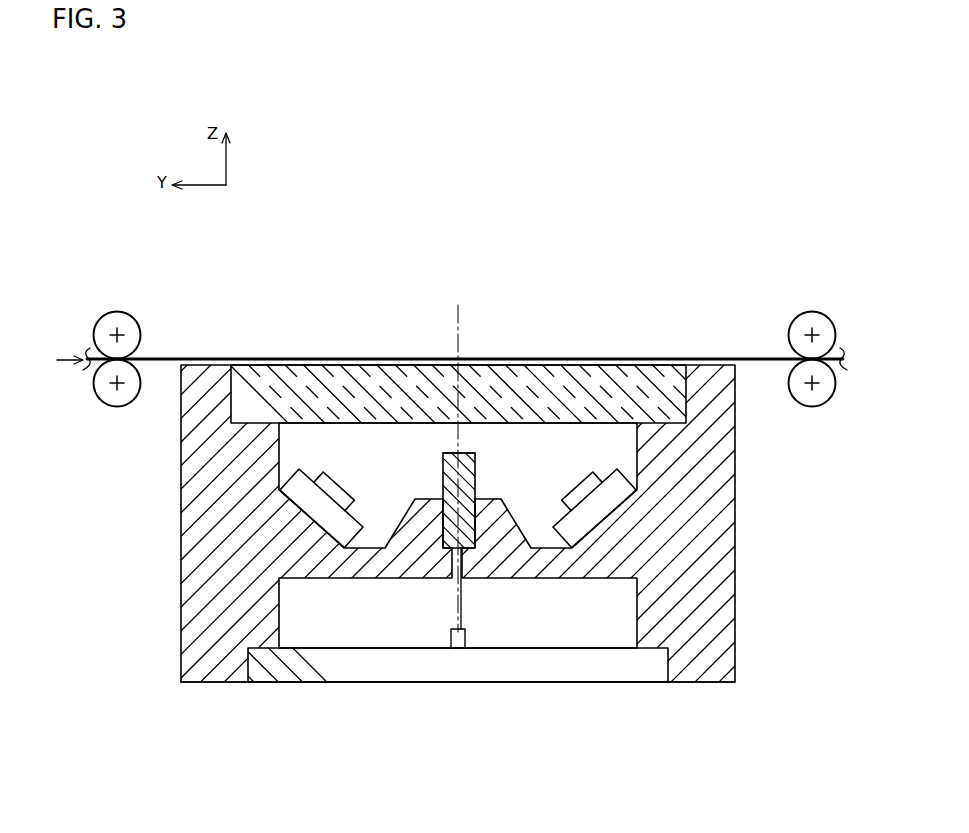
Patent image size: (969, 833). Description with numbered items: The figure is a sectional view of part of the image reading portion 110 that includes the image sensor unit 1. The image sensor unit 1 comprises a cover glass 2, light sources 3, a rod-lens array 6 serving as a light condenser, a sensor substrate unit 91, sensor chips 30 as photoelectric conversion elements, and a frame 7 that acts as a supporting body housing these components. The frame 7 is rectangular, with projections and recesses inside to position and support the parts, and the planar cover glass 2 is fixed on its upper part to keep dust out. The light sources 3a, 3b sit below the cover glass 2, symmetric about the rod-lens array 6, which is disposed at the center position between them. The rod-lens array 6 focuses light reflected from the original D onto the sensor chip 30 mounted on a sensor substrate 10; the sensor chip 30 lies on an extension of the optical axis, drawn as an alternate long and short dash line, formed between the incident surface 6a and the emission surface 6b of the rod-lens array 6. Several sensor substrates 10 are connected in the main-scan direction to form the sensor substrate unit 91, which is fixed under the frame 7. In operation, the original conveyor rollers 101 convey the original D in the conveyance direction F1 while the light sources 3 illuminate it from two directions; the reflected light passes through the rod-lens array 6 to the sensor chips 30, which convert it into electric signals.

The image reading portion 110 is at (701, 230).
The original conveyor rollers 101 is at (116, 311).
The image sensor unit 1 is at (245, 327).
The original D is at (162, 357).
The conveyance direction F1 is at (69, 349).
The cover glass 2 is at (652, 364).
The light sources 3 is at (458, 433).
The light source 3a is at (342, 482).
The light source 3b is at (574, 482).
The rod-lens array 6 is at (476, 459).
The incident surface 6a is at (449, 452).
The emission surface 6b is at (459, 562).
The frame 7 is at (719, 684).
The sensor substrate 10 is at (462, 656).
The sensor chip 30 is at (470, 636).
The sensor substrate unit 91 is at (333, 687).